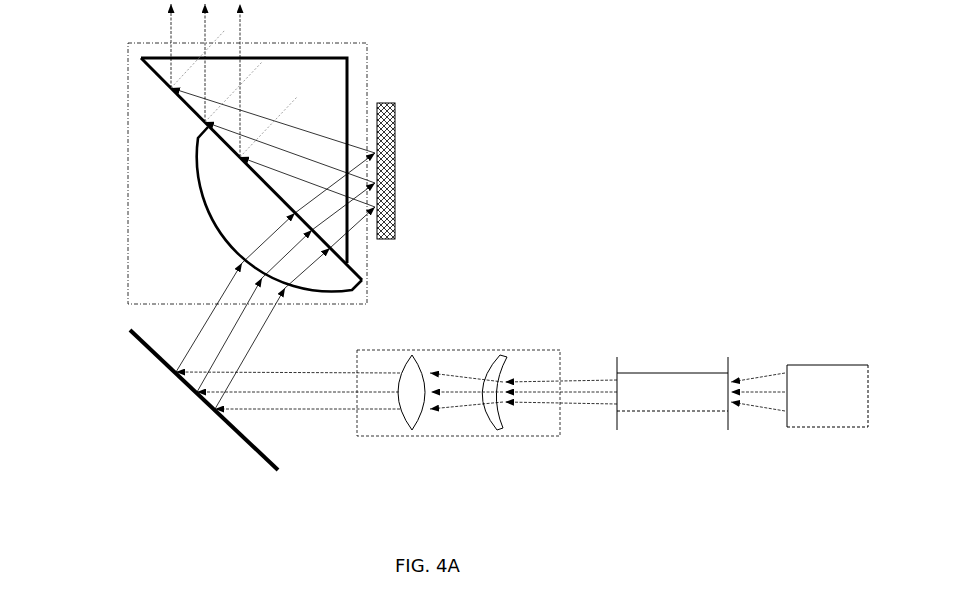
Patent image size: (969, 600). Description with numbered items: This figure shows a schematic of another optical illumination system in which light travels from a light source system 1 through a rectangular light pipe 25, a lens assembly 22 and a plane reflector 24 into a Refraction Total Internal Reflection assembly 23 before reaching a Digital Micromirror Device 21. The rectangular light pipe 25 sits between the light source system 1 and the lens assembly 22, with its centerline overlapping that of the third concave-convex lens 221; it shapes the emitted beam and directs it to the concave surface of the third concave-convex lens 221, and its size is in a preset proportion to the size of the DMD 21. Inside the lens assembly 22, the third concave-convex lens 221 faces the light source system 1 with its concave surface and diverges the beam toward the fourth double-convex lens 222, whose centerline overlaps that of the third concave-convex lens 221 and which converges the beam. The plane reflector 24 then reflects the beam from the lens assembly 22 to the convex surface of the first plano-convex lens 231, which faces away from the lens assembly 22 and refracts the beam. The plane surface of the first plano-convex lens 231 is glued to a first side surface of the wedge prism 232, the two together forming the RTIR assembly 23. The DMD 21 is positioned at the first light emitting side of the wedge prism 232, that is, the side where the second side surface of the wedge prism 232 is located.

The light source system 1 is at (832, 412).
The Digital Micromirror Device (DMD) 21 is at (397, 208).
The lens assembly 22 is at (487, 392).
The third concave-convex lens 221 is at (483, 417).
The fourth double-convex lens 222 is at (407, 428).
The Refraction Total Internal Reflection (RTIR) assembly 23 is at (247, 206).
The first plano-convex lens 231 is at (362, 282).
The wedge prism 232 is at (347, 246).
The plane reflector 24 is at (190, 390).
The rectangular light pipe 25 is at (690, 410).